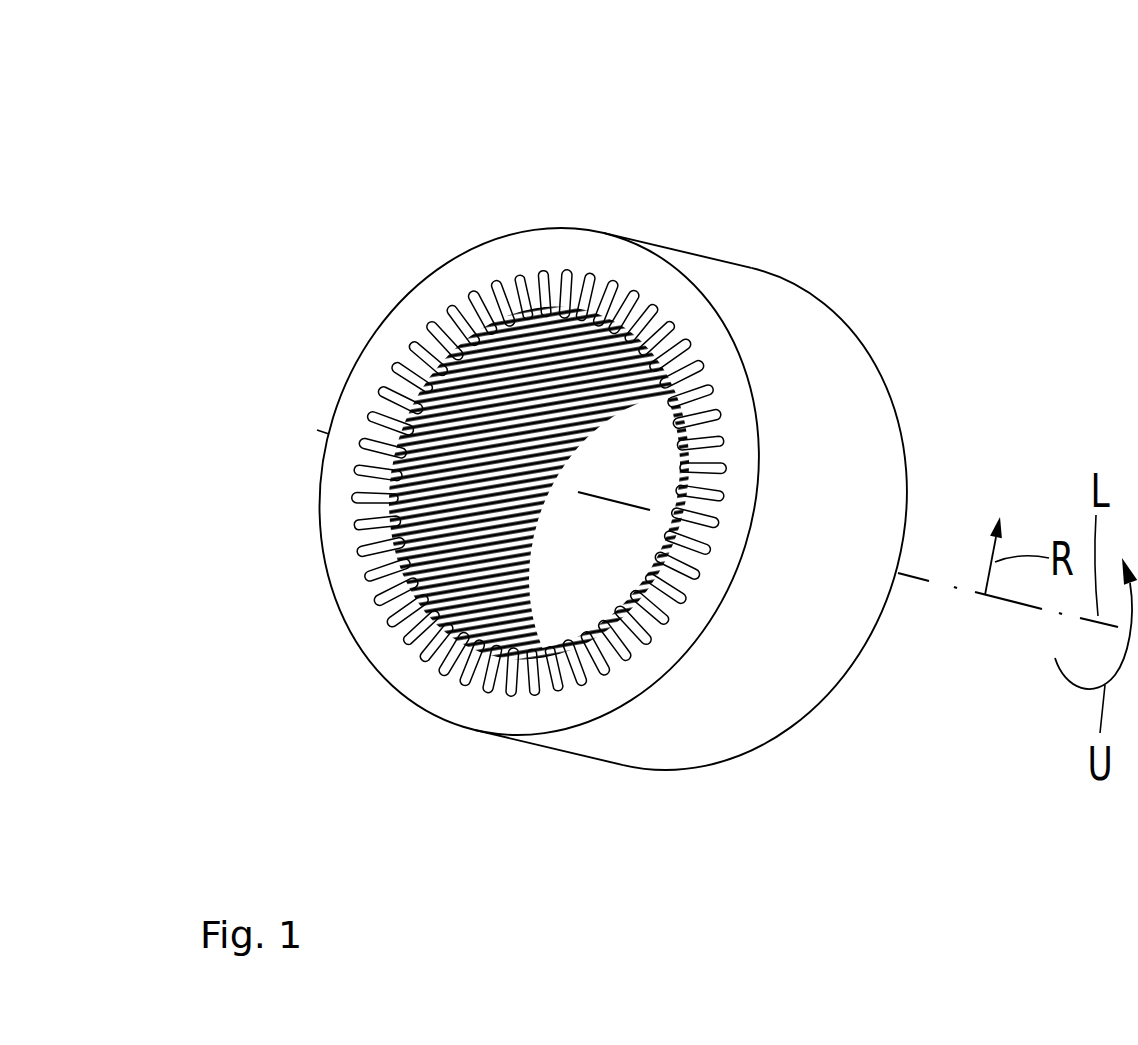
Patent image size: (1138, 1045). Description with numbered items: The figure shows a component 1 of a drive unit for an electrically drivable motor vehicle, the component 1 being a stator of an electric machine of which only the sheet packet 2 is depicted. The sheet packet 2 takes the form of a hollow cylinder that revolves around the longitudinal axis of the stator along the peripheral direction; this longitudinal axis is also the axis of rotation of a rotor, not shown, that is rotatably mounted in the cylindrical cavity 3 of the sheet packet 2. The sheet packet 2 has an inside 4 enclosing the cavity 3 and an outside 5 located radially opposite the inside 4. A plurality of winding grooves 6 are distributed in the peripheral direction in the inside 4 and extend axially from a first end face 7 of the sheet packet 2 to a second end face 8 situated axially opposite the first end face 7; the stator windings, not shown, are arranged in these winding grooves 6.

The component 1 is at (546, 143).
The sheet packet 2 is at (683, 252).
The cylindrical cavity 3 is at (458, 680).
The inside 4 is at (531, 540).
The outside 5 is at (797, 358).
The winding grooves 6 is at (497, 248).
The first end face 7 is at (390, 319).
The second end face 8 is at (944, 438).